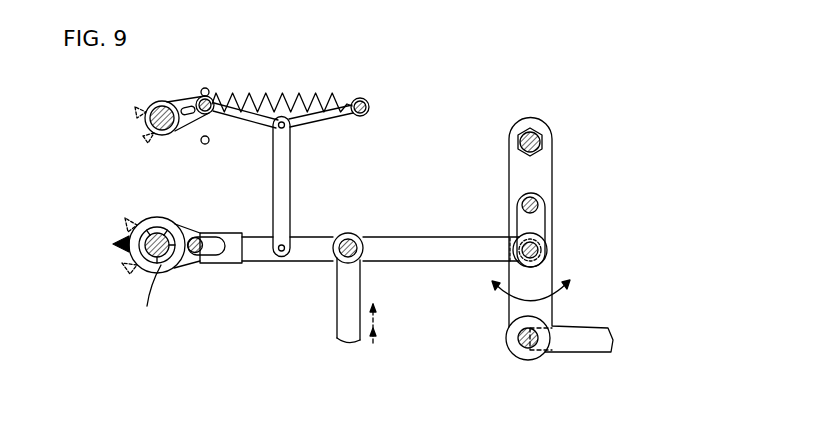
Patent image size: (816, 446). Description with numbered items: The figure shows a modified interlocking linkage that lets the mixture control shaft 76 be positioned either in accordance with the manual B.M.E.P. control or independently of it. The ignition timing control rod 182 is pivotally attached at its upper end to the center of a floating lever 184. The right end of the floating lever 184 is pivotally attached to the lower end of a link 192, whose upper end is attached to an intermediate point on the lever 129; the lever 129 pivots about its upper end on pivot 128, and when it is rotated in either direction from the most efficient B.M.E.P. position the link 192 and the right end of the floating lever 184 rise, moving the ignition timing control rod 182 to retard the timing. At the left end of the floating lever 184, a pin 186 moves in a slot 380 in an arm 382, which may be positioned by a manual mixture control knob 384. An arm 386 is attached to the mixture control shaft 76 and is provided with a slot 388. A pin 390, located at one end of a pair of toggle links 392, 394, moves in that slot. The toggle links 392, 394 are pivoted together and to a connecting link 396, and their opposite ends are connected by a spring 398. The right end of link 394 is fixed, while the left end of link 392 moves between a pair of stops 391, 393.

The mixture control shaft 76 is at (160, 102).
The arm 386 is at (197, 98).
The slot 388 is at (188, 120).
The pin 390 is at (208, 114).
The stop 391 is at (208, 88).
The stop 393 is at (209, 145).
The spring 398 is at (292, 93).
The toggle link 392 is at (256, 121).
The toggle link 394 is at (304, 124).
The connecting link 396 is at (292, 184).
The knob 384 is at (168, 227).
The pin 186 is at (200, 240).
The arm 382 is at (208, 262).
The slot 380 is at (226, 265).
The floating lever 184 is at (436, 240).
The ignition timing control rod 182 is at (347, 313).
The pivot 128 is at (546, 132).
The lever 129 is at (537, 177).
The link 192 is at (537, 222).